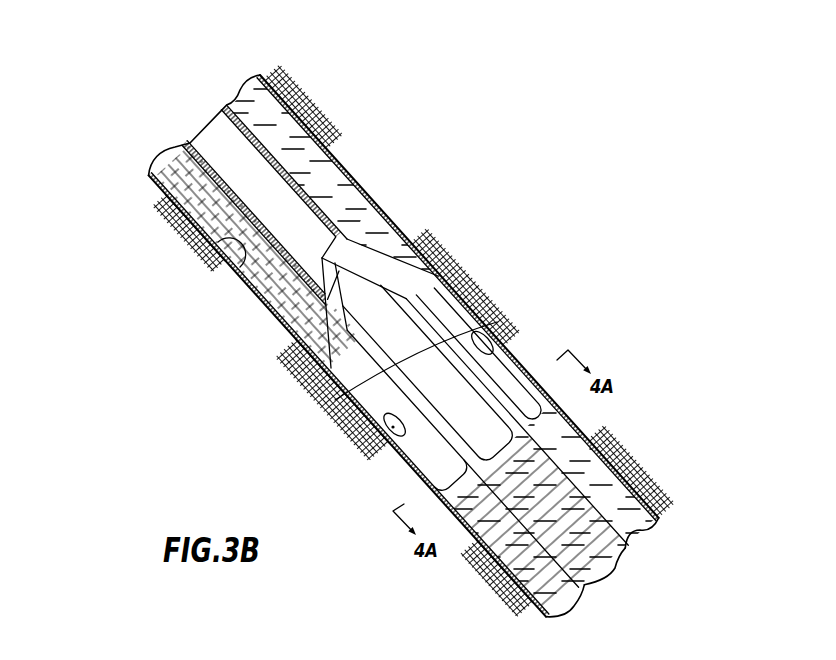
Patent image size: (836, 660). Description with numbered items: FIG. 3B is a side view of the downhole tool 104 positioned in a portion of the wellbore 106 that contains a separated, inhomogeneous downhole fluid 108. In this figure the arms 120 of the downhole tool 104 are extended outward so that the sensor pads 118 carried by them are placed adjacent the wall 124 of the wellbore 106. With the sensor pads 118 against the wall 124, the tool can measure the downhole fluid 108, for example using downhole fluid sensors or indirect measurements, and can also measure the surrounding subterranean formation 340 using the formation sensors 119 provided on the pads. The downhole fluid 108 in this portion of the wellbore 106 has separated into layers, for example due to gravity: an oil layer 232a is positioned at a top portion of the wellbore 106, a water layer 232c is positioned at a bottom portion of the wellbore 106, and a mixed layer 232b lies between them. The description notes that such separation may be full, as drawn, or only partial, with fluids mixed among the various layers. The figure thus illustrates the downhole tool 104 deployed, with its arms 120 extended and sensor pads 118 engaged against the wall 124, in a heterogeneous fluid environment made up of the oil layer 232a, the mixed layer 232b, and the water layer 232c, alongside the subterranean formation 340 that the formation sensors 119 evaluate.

The downhole tool 104 is at (231, 156).
The wellbore 106 is at (200, 242).
The downhole fluid 108 is at (492, 580).
The sensor pads 118 is at (335, 400).
The formation sensors 119 is at (487, 340).
The arms 120 is at (365, 258).
The wall of the wellbore 124 is at (431, 274).
The subterranean formation 340 is at (588, 266).
The oil layer 232a is at (640, 528).
The mixed layer 232b is at (600, 555).
The water layer 232c is at (562, 590).